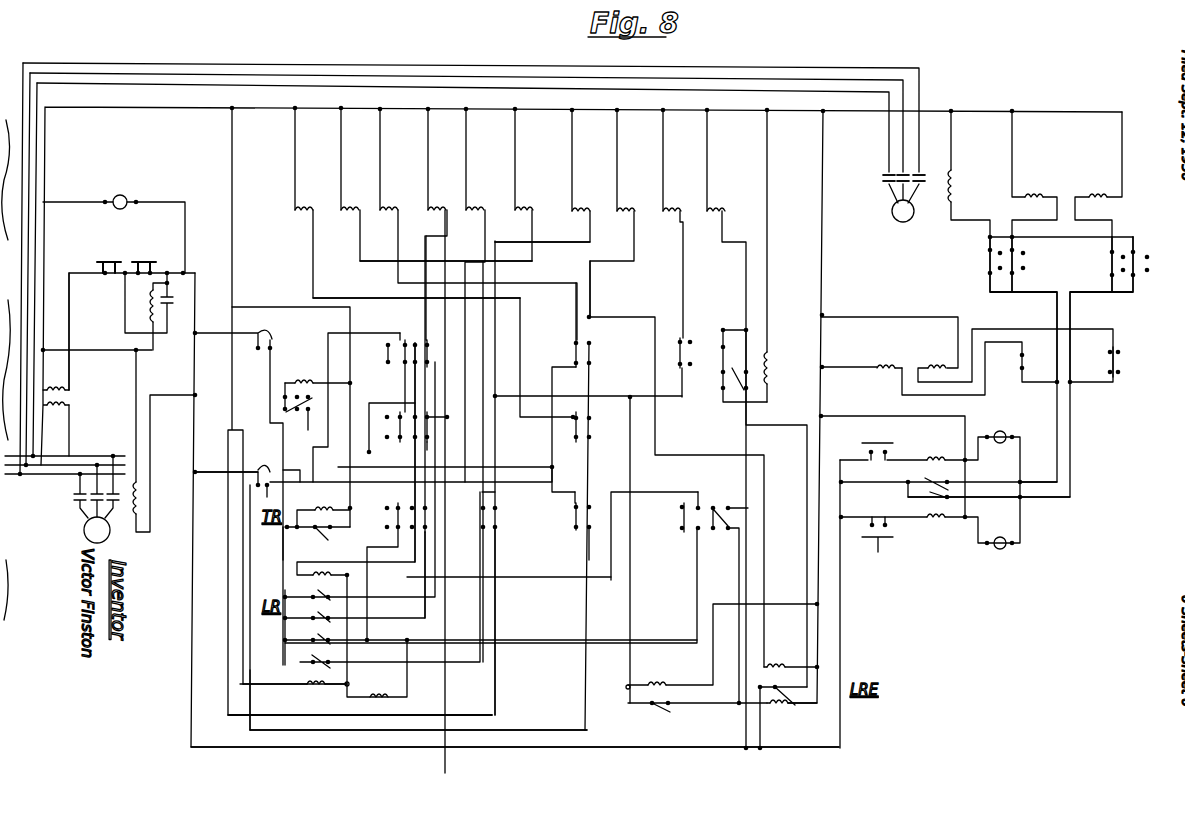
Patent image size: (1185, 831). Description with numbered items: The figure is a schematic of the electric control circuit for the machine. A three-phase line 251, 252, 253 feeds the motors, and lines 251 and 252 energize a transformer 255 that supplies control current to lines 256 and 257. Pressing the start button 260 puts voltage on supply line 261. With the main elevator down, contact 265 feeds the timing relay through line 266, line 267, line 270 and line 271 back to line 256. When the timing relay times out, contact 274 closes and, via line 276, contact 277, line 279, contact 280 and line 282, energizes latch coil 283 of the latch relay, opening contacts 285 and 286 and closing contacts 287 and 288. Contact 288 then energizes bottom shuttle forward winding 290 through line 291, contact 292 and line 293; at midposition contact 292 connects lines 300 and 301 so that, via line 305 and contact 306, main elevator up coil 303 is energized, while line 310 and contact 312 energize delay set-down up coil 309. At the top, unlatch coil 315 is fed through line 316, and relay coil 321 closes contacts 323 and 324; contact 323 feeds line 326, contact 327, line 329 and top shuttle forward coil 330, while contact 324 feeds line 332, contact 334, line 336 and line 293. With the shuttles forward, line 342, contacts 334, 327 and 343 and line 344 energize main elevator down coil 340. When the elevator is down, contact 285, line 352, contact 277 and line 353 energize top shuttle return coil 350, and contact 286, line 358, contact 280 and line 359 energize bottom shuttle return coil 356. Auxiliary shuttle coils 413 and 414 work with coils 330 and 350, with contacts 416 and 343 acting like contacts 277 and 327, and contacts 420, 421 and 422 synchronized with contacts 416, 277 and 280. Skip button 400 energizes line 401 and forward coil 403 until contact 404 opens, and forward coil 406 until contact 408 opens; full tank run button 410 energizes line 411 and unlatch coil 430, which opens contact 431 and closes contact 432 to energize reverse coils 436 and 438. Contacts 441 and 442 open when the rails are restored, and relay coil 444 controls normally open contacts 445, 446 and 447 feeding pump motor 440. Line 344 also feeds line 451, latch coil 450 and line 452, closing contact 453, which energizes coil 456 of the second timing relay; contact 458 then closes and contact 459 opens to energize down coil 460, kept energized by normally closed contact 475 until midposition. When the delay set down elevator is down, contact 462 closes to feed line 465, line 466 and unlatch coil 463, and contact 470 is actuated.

The three-phase line 251 is at (80, 450).
The three-phase line 252 is at (64, 490).
The three-phase line 253 is at (35, 478).
The transformer 255 is at (70, 400).
The control current supply line 256 is at (452, 107).
The control current supply line 257 is at (86, 322).
The start button 260 is at (146, 260).
The supply line 261 is at (192, 367).
The contact 265 is at (268, 460).
The line 266 is at (215, 485).
The line 267 is at (283, 560).
The line 270 is at (298, 309).
The line 271 is at (235, 253).
The contact 274 is at (320, 545).
The line 276 is at (358, 488).
The contact 277 is at (430, 412).
The line 279 is at (410, 455).
The contact 280 is at (492, 517).
The line 282 is at (392, 570).
The latch coil 283 is at (287, 572).
The contact 285 is at (318, 590).
The contact 286 is at (354, 577).
The contact 287 is at (490, 631).
The contact 288 is at (385, 580).
The bottom shuttle forward winding 290 is at (478, 205).
The line 291 is at (453, 700).
The contact 292 is at (497, 532).
The line 293 is at (487, 243).
The line 300 is at (225, 520).
The line 301 is at (500, 440).
The main elevator up coil 303 is at (580, 206).
The line 305 is at (233, 332).
The contact 306 is at (255, 346).
The delay set-down elevator up coil 309 is at (672, 206).
The line 310 is at (607, 396).
The contact 312 is at (686, 352).
The unlatch coil 315 is at (320, 698).
The line 316 is at (293, 372).
The coil 321 is at (309, 370).
The contact 323 is at (270, 400).
The contact 324 is at (295, 416).
The line 326 is at (506, 470).
The contact 327 is at (580, 426).
The line 329 is at (523, 325).
The top shuttle forward coil 330 is at (308, 193).
The line 332 is at (312, 468).
The contact 334 is at (578, 532).
The line 336 is at (532, 502).
The main elevator down coil 340 is at (625, 206).
The line 342 is at (252, 670).
The contact 343 is at (580, 356).
The line 344 is at (602, 270).
The top shuttle return coil 350 is at (358, 193).
The line 352 is at (376, 600).
The line 353 is at (375, 298).
The bottom shuttle return coil 356 is at (525, 205).
The line 358 is at (388, 620).
The line 359 is at (478, 262).
The skip button 400 is at (882, 440).
The line 401 is at (1055, 455).
The forward coil 403 is at (885, 364).
The limit switch contact 404 is at (1025, 360).
The forward coil 406 is at (1035, 193).
The elevator skip forward limit switch contact 408 is at (1026, 261).
The full tank run button 410 is at (882, 552).
The line 411 is at (1052, 500).
The top auxiliary shuttle forward coil 413 is at (392, 205).
The top auxiliary shuttle reverse coil 414 is at (440, 205).
The limit switch contact 416 is at (431, 324).
The contact 420 is at (386, 353).
The contact 421 is at (398, 412).
The contact 422 is at (386, 530).
The unlatch coil 430 is at (932, 522).
The contact 431 is at (920, 478).
The contact 432 is at (915, 494).
The reverse coil 436 is at (938, 364).
The reverse coil 438 is at (1098, 193).
The motor 440 is at (897, 222).
The contact 441 is at (1150, 262).
The limit switch contact 442 is at (1117, 362).
The relay coil 444 is at (955, 185).
The normally open contact 445 is at (878, 176).
The normally open contact 446 is at (905, 170).
The normally open contact 447 is at (935, 164).
The latch coil 450 is at (780, 660).
The line 451 is at (648, 315).
The line 452 is at (821, 620).
The contact 453 is at (800, 712).
The coil 456 is at (766, 352).
The contact 458 is at (740, 380).
The contact 459 is at (735, 395).
The down coil 460 is at (715, 206).
The contact 462 is at (718, 505).
The unlatch coil 463 is at (772, 710).
The line 465 is at (754, 718).
The line 466 is at (740, 555).
The contact 470 is at (679, 518).
The normally closed contact 475 is at (720, 338).